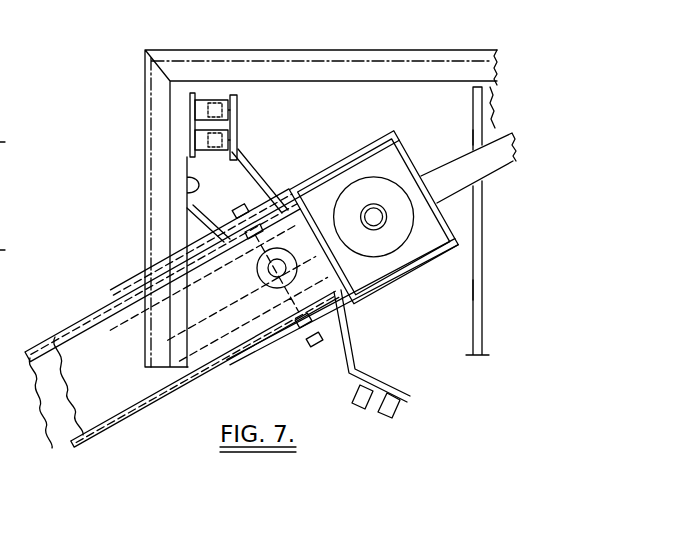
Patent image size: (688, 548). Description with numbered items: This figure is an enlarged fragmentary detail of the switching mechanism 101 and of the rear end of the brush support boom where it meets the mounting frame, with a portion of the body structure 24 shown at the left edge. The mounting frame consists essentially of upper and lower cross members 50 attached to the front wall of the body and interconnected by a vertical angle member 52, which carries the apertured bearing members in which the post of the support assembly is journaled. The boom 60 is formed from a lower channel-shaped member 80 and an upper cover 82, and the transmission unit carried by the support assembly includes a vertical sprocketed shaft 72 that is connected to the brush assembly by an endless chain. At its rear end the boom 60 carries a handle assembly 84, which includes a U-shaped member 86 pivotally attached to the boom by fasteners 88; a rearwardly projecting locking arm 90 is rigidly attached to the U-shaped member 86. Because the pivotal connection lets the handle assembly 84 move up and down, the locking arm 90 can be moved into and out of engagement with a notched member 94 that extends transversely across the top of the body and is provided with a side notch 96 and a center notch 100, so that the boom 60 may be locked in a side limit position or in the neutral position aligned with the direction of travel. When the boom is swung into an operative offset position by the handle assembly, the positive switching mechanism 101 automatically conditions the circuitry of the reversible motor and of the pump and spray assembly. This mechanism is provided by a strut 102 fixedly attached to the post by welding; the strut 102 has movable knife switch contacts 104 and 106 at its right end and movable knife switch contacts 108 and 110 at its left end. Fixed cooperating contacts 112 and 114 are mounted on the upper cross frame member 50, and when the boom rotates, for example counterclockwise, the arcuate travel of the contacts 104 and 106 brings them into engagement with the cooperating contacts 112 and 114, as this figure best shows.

The frame member 24 is at (5, 142).
The cross member 50 is at (187, 192).
The vertical angle member 52 is at (205, 222).
The boom 60 is at (97, 313).
The vertical sprocketed shaft 72 is at (400, 228).
The lower channel-shaped member 80 is at (44, 343).
The upper cover 82 is at (155, 415).
The handle assembly 84 is at (362, 148).
The U-shaped member 86 is at (418, 160).
The fasteners 88 is at (246, 193).
The locking arm 90 is at (457, 162).
The notched member 94 is at (472, 322).
The side notch 96 is at (483, 178).
The center notch 100 is at (482, 284).
The switching mechanism 101 is at (263, 173).
The strut 102 is at (353, 360).
The movable knife switch contact 104 is at (236, 137).
The movable knife switch contact 106 is at (231, 100).
The movable knife switch contact 108 is at (392, 410).
The movable knife switch contact 110 is at (363, 407).
The fixed cooperating contact 112 is at (200, 108).
The fixed cooperating contact 114 is at (200, 143).